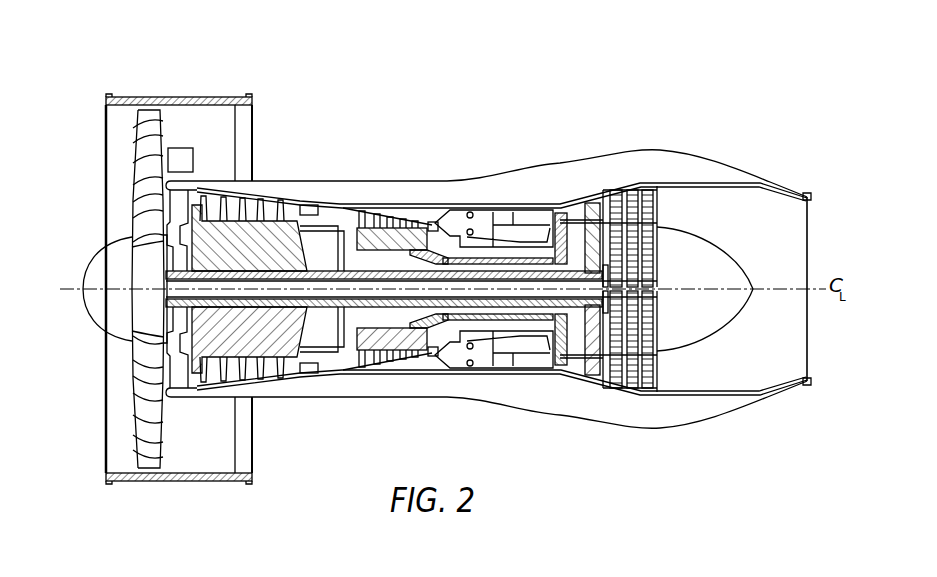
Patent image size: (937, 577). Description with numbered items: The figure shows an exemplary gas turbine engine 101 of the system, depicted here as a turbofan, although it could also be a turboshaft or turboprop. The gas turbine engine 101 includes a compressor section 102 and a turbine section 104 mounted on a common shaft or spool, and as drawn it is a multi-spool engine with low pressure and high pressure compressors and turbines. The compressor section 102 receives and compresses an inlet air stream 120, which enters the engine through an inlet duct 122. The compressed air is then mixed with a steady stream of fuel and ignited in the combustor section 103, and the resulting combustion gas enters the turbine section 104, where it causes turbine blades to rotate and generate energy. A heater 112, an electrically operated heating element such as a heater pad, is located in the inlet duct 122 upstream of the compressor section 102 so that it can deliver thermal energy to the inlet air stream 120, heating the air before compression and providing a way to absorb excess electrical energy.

The gas turbine engine 101 is at (587, 62).
The compressor section 102 is at (332, 380).
The combustor section 103 is at (480, 359).
The turbine section 104 is at (605, 392).
The heater 112 is at (180, 148).
The inlet air stream 120 is at (93, 133).
The inlet duct 122 is at (192, 482).